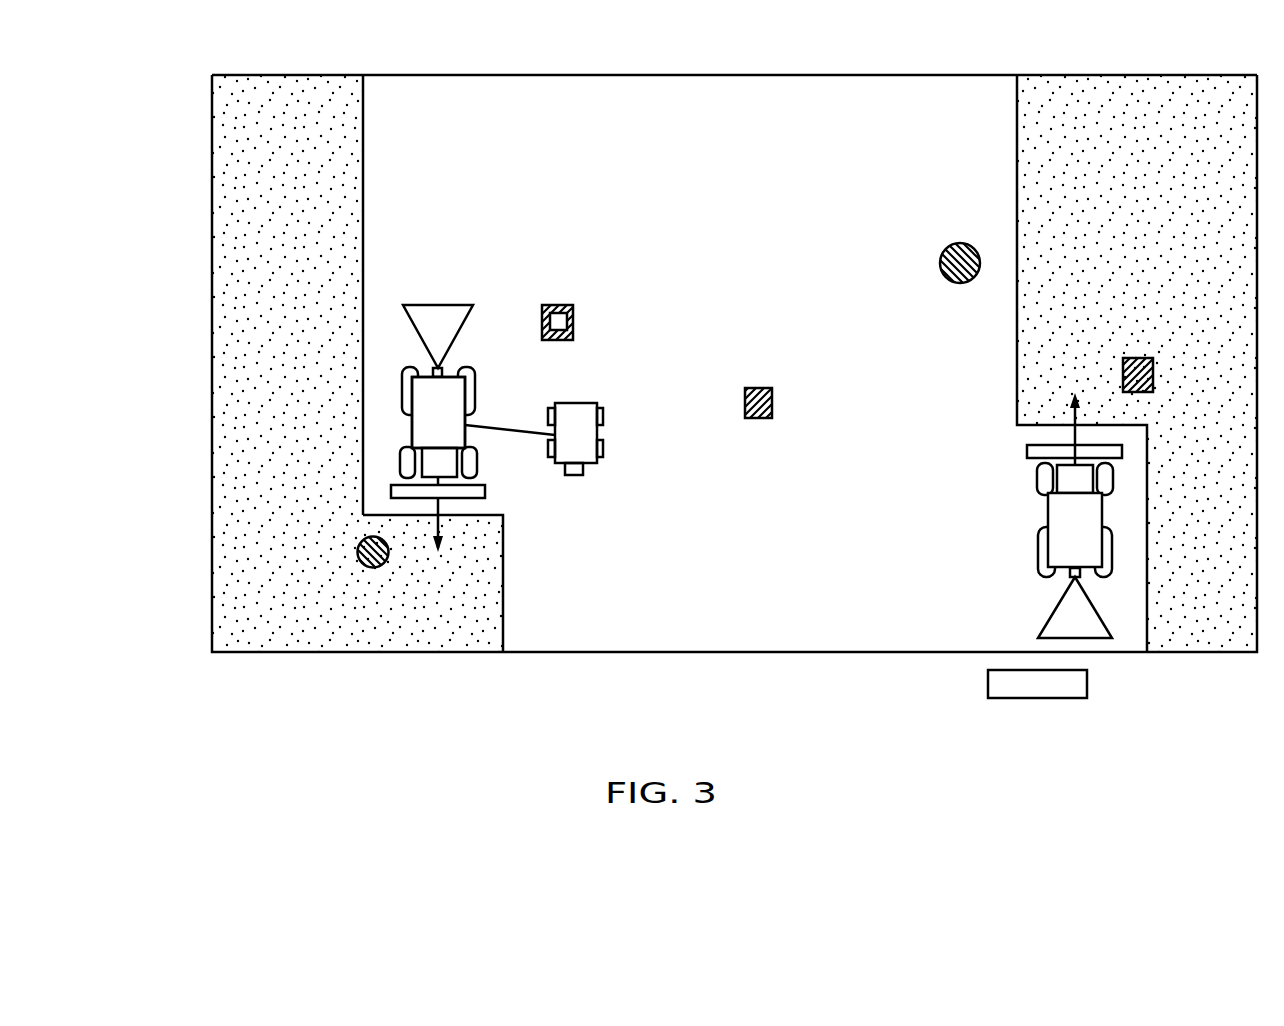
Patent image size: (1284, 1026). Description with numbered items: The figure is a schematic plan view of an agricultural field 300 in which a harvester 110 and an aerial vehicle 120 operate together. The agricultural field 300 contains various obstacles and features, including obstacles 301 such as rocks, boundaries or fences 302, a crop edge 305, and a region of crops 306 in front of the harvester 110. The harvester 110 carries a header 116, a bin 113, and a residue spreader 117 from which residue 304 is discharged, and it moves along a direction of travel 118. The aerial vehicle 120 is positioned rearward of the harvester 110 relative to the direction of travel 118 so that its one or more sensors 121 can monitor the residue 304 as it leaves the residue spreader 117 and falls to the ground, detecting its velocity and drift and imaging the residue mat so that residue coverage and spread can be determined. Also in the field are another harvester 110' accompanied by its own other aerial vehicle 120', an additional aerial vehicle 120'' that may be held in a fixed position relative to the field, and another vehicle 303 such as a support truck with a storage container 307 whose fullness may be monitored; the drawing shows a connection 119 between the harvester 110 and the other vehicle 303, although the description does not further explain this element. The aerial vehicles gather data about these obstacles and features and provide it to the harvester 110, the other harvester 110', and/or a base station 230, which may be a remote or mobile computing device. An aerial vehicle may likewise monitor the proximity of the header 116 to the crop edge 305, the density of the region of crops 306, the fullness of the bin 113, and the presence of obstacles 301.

The agricultural field 300 is at (807, 102).
The boundaries or fences 302 is at (735, 75).
The crop edge 305 is at (365, 222).
The region of crops 306 is at (462, 618).
The obstacles 301 is at (357, 548).
The residue 304 is at (458, 310).
The bin 113 is at (420, 407).
The residue spreader 117 is at (443, 370).
The harvester 110 is at (508, 419).
The communication link 119 is at (477, 427).
The other vehicle 303 is at (603, 432).
The storage container 307 is at (580, 452).
The header 116 is at (485, 490).
The direction of travel 118 is at (440, 522).
The aerial vehicle 120 is at (535, 303).
The sensors 121 is at (567, 316).
The additional aerial vehicle 120'' is at (734, 388).
The other aerial vehicle 120' is at (1055, 365).
The other harvester 110' is at (1026, 515).
The base station 230 is at (1037, 698).